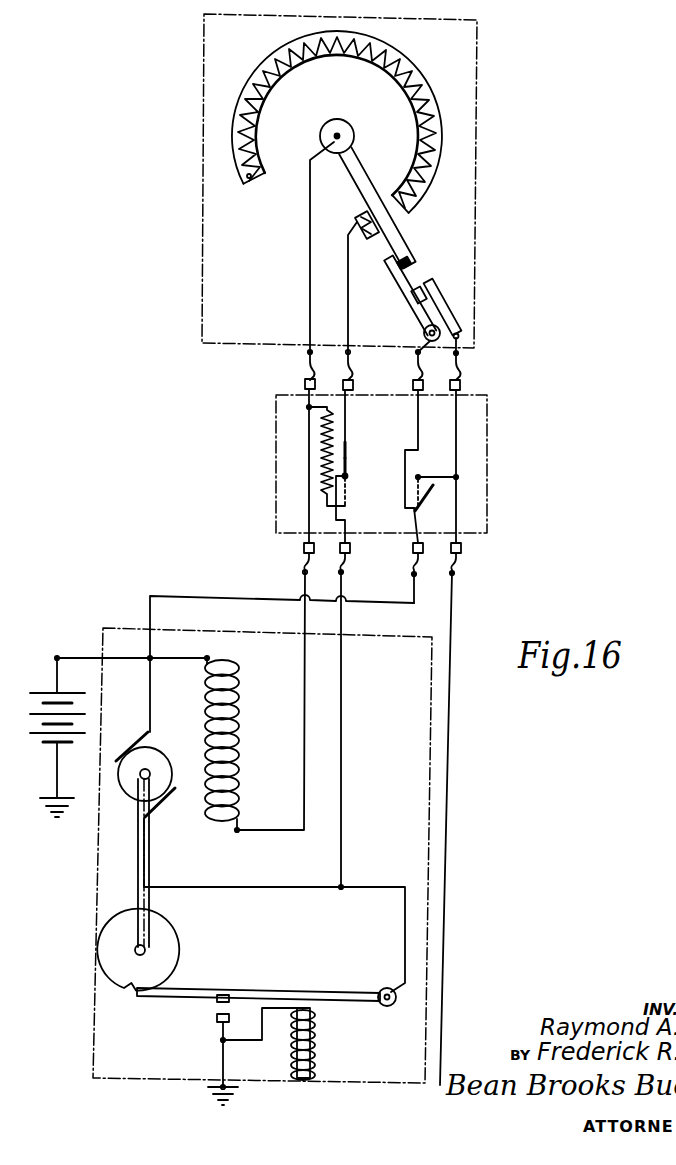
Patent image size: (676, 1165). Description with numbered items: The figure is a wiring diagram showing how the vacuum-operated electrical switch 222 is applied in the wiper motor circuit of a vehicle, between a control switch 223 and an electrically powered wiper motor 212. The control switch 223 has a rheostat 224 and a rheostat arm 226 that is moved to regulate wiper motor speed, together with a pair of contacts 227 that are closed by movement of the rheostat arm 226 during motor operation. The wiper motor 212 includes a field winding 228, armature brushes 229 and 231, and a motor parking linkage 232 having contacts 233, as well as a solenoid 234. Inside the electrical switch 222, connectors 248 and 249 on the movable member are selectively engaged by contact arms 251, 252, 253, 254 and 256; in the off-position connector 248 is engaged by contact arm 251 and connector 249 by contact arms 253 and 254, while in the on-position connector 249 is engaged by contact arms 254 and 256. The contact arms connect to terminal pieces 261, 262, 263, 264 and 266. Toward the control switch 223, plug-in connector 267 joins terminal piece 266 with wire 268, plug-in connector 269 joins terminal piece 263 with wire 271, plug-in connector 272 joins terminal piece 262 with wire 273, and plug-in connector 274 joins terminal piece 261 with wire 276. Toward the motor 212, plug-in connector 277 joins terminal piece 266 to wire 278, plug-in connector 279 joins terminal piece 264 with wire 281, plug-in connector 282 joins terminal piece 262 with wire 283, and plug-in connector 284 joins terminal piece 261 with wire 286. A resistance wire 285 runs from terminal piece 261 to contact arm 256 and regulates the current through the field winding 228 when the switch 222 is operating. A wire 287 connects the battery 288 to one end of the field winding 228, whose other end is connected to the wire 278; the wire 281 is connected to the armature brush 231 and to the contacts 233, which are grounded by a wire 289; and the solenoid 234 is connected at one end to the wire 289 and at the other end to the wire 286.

The wiper motor 212 is at (432, 730).
The electrical switch 222 is at (488, 470).
The control switch 223 is at (478, 150).
The rheostat 224 is at (430, 116).
The rheostat arm 226 is at (357, 172).
The pair of contacts 227 is at (420, 300).
The field winding 228 is at (240, 751).
The armature brush 229 is at (128, 746).
The armature brush 231 is at (158, 806).
The motor parking linkage 232 is at (256, 987).
The contacts 233 is at (216, 1003).
The solenoid 234 is at (312, 1062).
The connector 248 is at (419, 506).
The connector 249 is at (348, 460).
The contact arm 251 is at (418, 476).
The contact arm 252 is at (415, 514).
The contact arm 253 is at (348, 445).
The contact arm 254 is at (348, 476).
The contact arm 256 is at (348, 507).
The terminal piece 261 is at (457, 429).
The terminal piece 262 is at (418, 427).
The terminal piece 263 is at (345, 426).
The terminal piece 264 is at (345, 526).
The terminal piece 266 is at (306, 461).
The plug-in connector 267 is at (306, 371).
The wire 268 is at (310, 276).
The plug-in connector 269 is at (352, 377).
The wire 271 is at (348, 312).
The plug-in connector 272 is at (412, 385).
The wire 273 is at (420, 339).
The plug-in connector 274 is at (462, 381).
The wire 276 is at (458, 344).
The plug-in connector 277 is at (304, 565).
The wire 278 is at (304, 614).
The plug-in connector 279 is at (350, 560).
The wire 281 is at (344, 628).
The plug-in connector 282 is at (411, 570).
The wire 283 is at (150, 610).
The plug-in connector 284 is at (460, 562).
The resistance wire 285 is at (324, 436).
The wire 286 is at (451, 648).
The wire 287 is at (78, 653).
The battery 288 is at (35, 690).
The wire 289 is at (222, 1068).